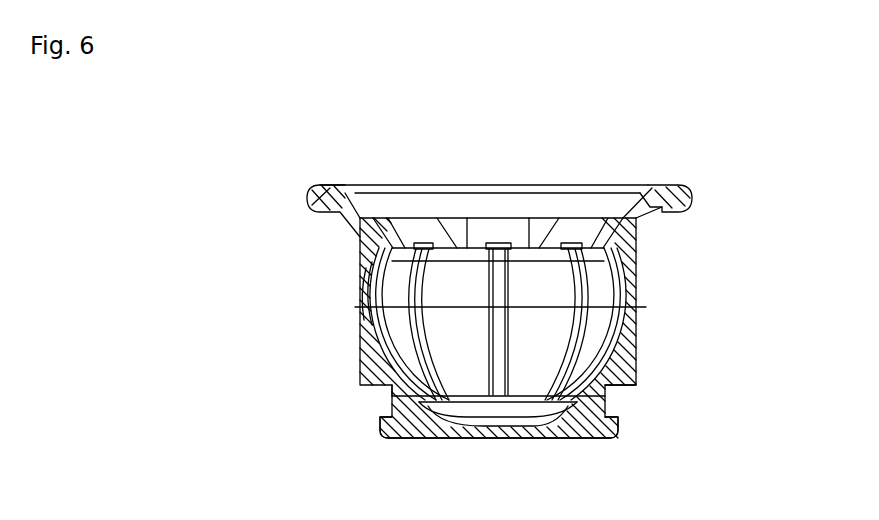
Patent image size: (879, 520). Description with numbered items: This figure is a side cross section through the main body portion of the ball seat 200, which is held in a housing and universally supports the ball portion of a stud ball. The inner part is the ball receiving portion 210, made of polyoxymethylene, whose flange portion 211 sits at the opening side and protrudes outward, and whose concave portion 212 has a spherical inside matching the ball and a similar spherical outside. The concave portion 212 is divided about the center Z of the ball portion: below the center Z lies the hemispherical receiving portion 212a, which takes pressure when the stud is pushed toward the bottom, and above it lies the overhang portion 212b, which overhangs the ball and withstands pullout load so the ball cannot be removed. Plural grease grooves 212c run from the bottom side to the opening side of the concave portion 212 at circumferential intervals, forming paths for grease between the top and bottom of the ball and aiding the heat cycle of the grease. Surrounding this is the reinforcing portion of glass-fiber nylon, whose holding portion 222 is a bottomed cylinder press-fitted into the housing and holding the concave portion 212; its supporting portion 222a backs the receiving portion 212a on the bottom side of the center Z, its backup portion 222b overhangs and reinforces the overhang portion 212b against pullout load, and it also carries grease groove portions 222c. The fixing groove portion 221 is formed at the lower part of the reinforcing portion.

The ball seat 200 is at (626, 166).
The ball receiving portion 210 is at (673, 187).
The flange portion 211 is at (310, 199).
The concave portion 212 is at (373, 334).
The receiving portion 212a is at (378, 392).
The overhang portion 212b is at (380, 287).
The grease grooves 212c is at (408, 355).
The fixing groove portion 221 is at (610, 405).
The holding portion 222 is at (641, 258).
The supporting portion 222a is at (630, 366).
The backup portion 222b is at (636, 282).
The grease groove portions 222c is at (428, 218).
The center of the ball portion Z is at (513, 310).